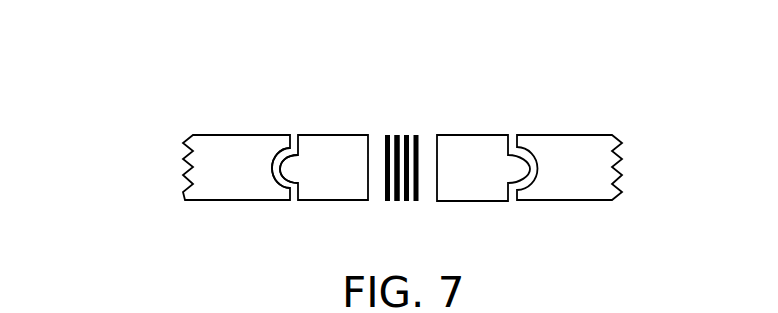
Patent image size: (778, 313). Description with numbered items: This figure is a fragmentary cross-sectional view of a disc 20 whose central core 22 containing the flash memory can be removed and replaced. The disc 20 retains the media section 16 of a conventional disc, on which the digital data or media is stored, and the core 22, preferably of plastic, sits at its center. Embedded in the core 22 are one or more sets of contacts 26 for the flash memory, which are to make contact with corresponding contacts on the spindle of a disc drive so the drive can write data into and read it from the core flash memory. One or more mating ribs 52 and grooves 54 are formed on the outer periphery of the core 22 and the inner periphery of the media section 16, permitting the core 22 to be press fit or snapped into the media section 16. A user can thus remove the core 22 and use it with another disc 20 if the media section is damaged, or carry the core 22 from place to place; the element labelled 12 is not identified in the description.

The strip assembly 20 is at (90, 99).
The strip segment 16 is at (215, 133).
The connector segment 22 is at (310, 133).
The fastener strip 12 is at (403, 127).
The connecting strip 26 is at (397, 201).
The tab 52 is at (292, 168).
The notch 54 is at (281, 172).